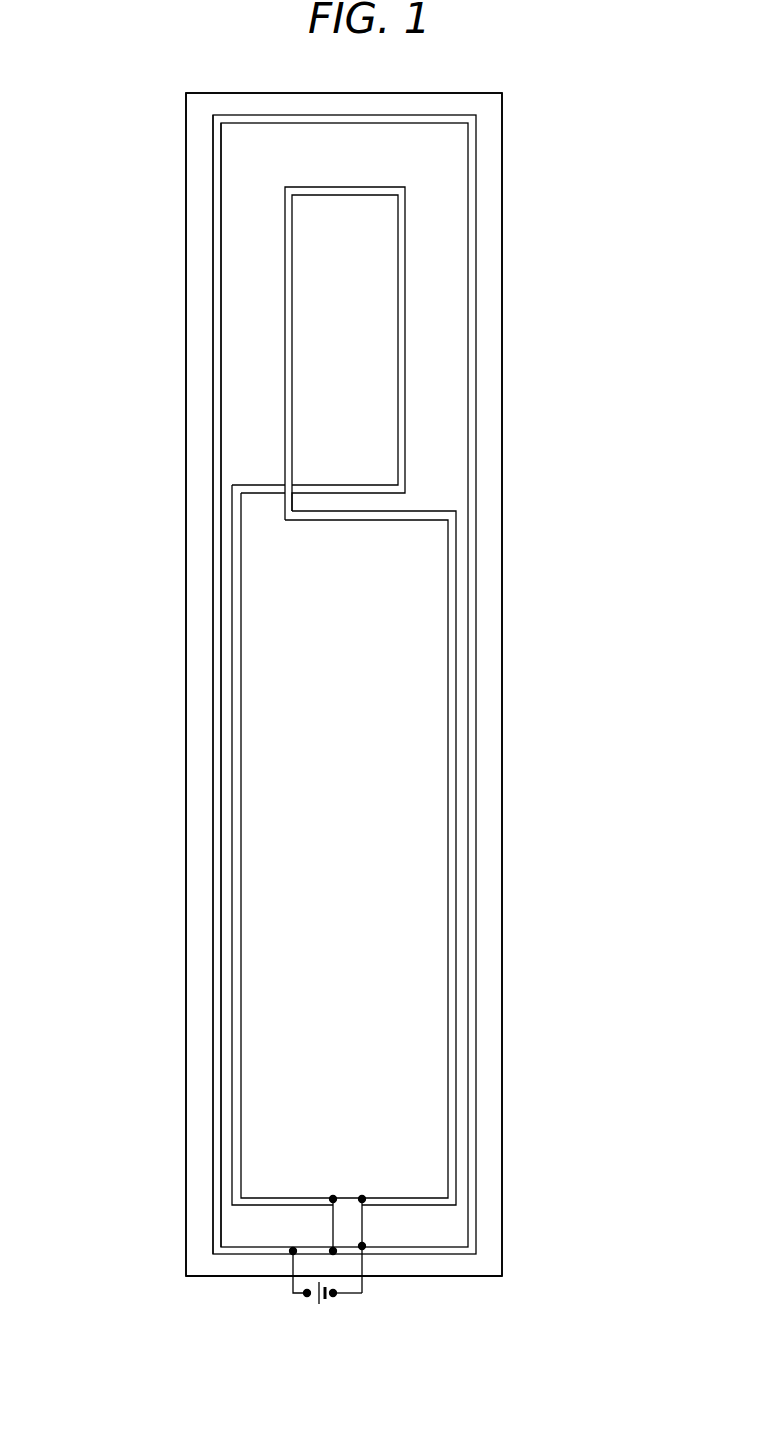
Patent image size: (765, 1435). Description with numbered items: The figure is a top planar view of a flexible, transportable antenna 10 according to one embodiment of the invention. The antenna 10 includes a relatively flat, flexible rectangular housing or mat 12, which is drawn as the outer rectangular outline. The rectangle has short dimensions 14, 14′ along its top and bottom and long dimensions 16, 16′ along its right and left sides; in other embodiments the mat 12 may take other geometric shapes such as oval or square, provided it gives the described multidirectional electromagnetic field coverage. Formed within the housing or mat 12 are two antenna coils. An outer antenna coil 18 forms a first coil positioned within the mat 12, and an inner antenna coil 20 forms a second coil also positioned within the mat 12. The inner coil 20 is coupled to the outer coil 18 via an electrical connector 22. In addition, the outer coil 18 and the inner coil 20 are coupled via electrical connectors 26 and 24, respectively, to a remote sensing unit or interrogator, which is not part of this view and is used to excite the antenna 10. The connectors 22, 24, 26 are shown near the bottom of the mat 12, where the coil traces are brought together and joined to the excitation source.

The antenna 10 is at (166, 235).
The housing or mat 12 is at (510, 172).
The short dimension 14 is at (478, 99).
The short dimension 14′ is at (458, 1275).
The long dimension 16 is at (504, 733).
The long dimension 16′ is at (186, 733).
The outer antenna coil 18 is at (472, 267).
The inner antenna coil 20 is at (450, 588).
The electrical connector 22 is at (333, 1220).
The electrical connector 24 is at (362, 1222).
The electrical connector 26 is at (292, 1265).